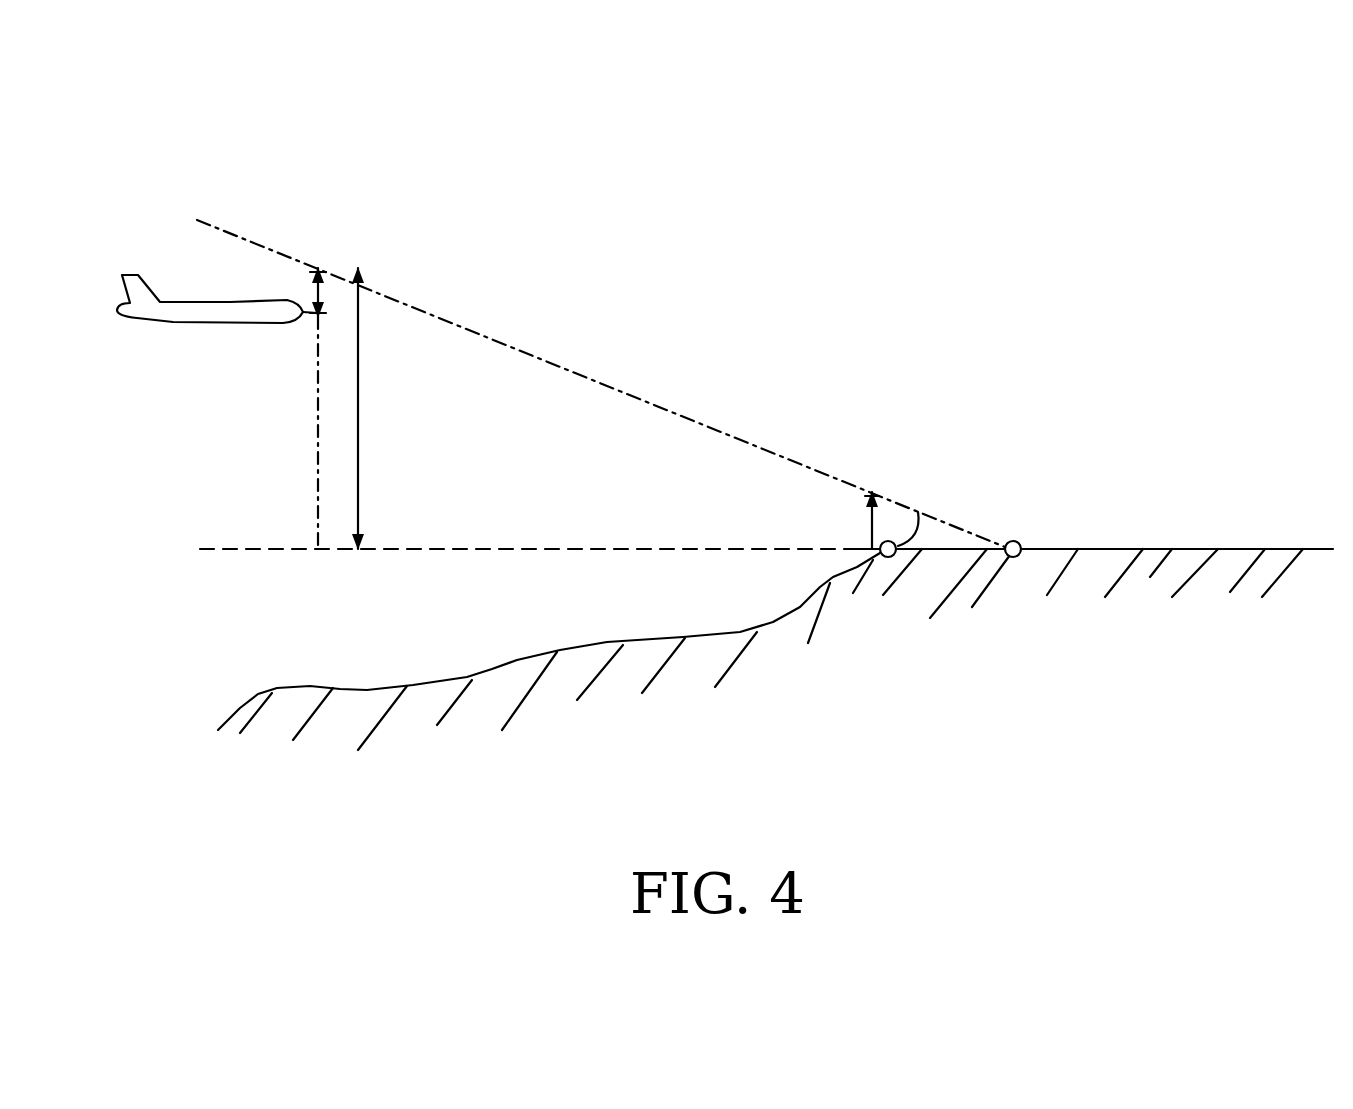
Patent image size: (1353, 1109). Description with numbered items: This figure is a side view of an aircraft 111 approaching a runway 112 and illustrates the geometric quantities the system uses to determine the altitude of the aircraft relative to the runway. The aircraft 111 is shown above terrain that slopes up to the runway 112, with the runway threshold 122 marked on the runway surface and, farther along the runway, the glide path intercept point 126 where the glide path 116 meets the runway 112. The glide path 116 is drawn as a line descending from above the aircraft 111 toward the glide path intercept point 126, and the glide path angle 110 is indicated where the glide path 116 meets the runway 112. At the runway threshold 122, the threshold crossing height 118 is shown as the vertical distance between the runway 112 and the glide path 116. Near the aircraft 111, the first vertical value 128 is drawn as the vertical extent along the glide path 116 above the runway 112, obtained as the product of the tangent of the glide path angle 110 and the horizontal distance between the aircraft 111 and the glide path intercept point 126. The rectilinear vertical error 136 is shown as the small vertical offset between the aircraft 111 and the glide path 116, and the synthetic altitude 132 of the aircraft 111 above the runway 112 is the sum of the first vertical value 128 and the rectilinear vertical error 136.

The glide path angle 110 is at (905, 518).
The aircraft 111 is at (197, 318).
The runway 112 is at (1147, 545).
The glide path 116 is at (602, 385).
The threshold crossing height 118 is at (867, 518).
The runway threshold 122 is at (887, 562).
The glide path intercept point 126 is at (1017, 535).
The first vertical value 128 is at (360, 390).
The synthetic altitude 132 is at (317, 438).
The rectilinear vertical error 136 is at (313, 297).